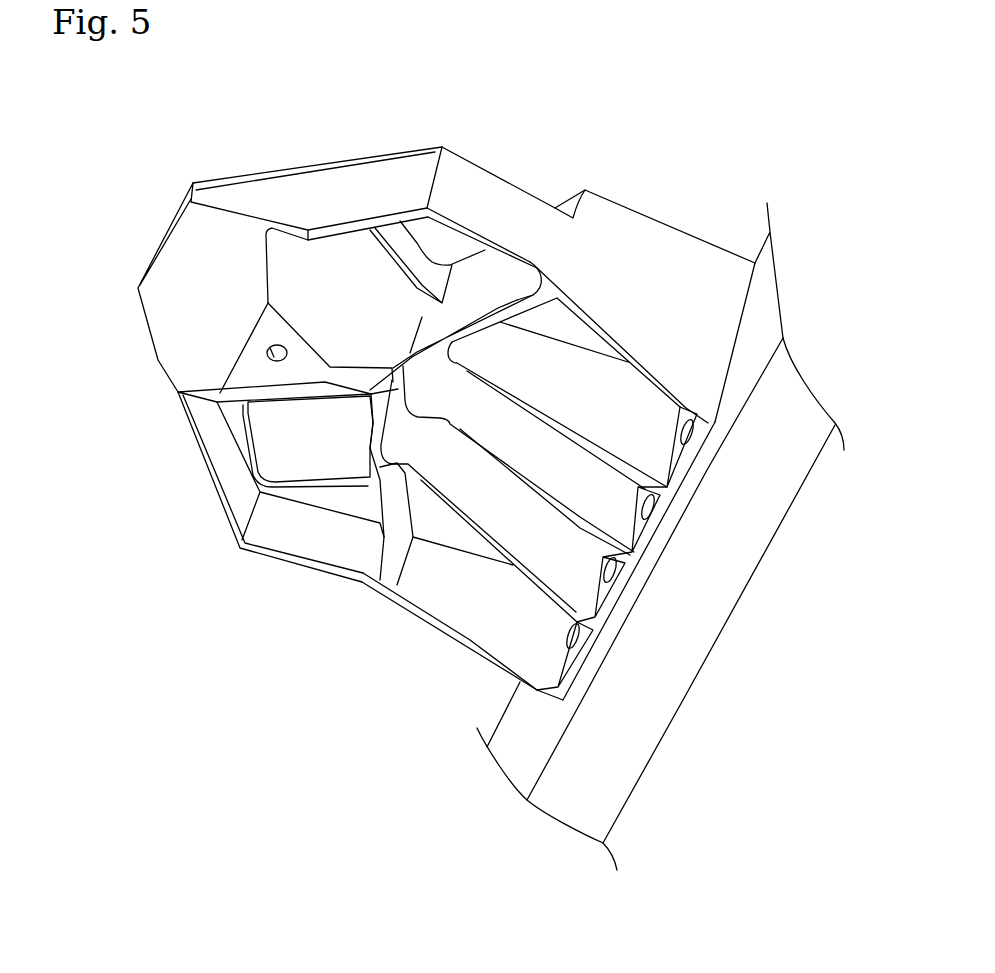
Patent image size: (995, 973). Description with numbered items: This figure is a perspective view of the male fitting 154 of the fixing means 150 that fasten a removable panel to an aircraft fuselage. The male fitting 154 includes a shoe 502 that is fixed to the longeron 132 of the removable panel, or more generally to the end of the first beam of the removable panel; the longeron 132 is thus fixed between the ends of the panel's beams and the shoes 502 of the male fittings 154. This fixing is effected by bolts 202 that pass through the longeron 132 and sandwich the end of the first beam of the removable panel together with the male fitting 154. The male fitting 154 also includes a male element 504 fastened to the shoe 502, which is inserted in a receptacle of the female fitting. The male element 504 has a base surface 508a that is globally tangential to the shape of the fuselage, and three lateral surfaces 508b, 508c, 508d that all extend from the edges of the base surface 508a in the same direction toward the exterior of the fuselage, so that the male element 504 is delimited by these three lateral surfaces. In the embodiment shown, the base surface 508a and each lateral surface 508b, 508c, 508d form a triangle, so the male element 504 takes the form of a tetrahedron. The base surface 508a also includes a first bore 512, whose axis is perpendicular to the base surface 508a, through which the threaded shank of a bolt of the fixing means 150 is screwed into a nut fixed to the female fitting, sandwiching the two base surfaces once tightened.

The fixing means 150 is at (732, 167).
The longeron 132 is at (657, 705).
The male fitting 154 is at (258, 643).
The bolts 202 is at (573, 636).
The shoe 502 is at (465, 623).
The male element 504 is at (183, 517).
The base surface 508a is at (257, 366).
The lateral surface 508b is at (222, 393).
The lateral surface 508c is at (232, 312).
The lateral surface 508d is at (372, 307).
The first bore 512 is at (277, 345).